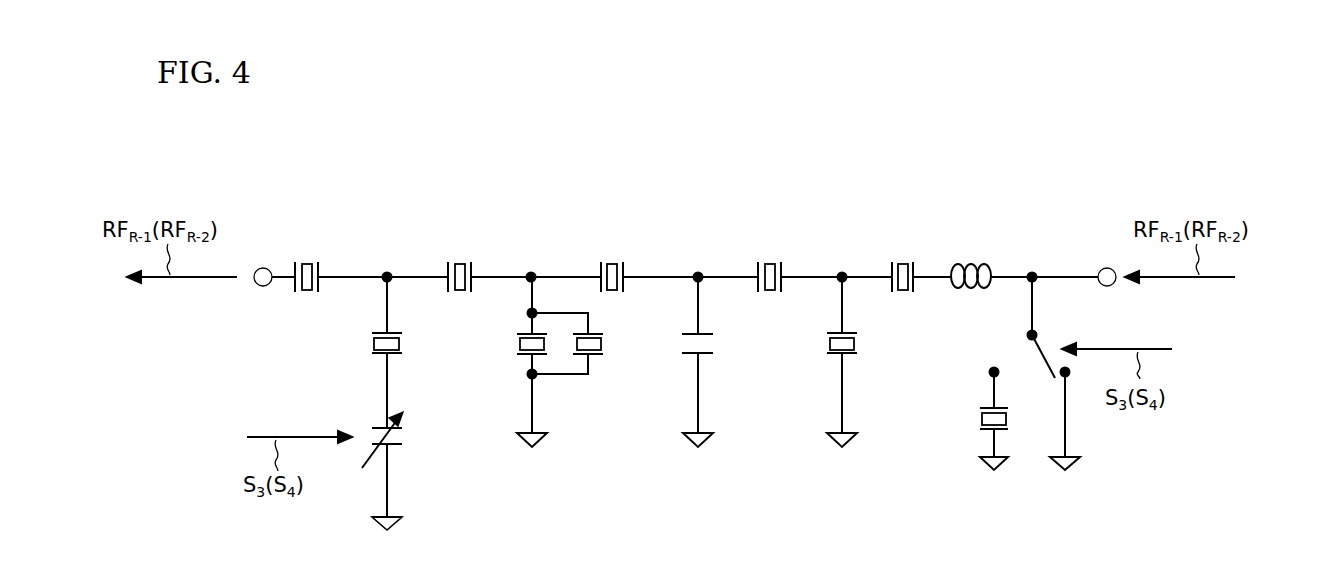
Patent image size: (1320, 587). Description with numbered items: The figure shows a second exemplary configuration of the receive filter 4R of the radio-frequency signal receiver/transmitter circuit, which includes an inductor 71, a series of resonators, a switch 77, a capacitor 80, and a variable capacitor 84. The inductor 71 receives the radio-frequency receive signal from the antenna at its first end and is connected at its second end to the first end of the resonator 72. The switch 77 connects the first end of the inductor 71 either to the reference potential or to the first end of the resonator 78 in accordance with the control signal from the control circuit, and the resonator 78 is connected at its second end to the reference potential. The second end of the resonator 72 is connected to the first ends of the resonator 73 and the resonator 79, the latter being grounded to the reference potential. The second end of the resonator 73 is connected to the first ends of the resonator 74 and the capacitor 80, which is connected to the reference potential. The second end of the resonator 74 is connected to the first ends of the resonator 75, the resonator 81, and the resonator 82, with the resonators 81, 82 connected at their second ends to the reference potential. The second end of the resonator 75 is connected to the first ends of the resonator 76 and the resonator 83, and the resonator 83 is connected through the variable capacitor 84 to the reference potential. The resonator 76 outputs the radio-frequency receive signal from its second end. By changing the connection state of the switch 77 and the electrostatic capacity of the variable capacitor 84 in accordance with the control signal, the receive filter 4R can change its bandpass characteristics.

The receive filter 4R is at (1196, 98).
The inductor 71 is at (971, 262).
The resonator 72 is at (903, 262).
The resonator 73 is at (770, 262).
The resonator 74 is at (613, 262).
The resonator 75 is at (460, 262).
The resonator 76 is at (306, 262).
The switch 77 is at (1005, 346).
The resonator 78 is at (980, 418).
The resonator 79 is at (827, 342).
The capacitor 80 is at (690, 355).
The resonator 81 is at (603, 346).
The resonator 82 is at (518, 342).
The resonator 83 is at (403, 342).
The variable capacitor 84 is at (392, 446).